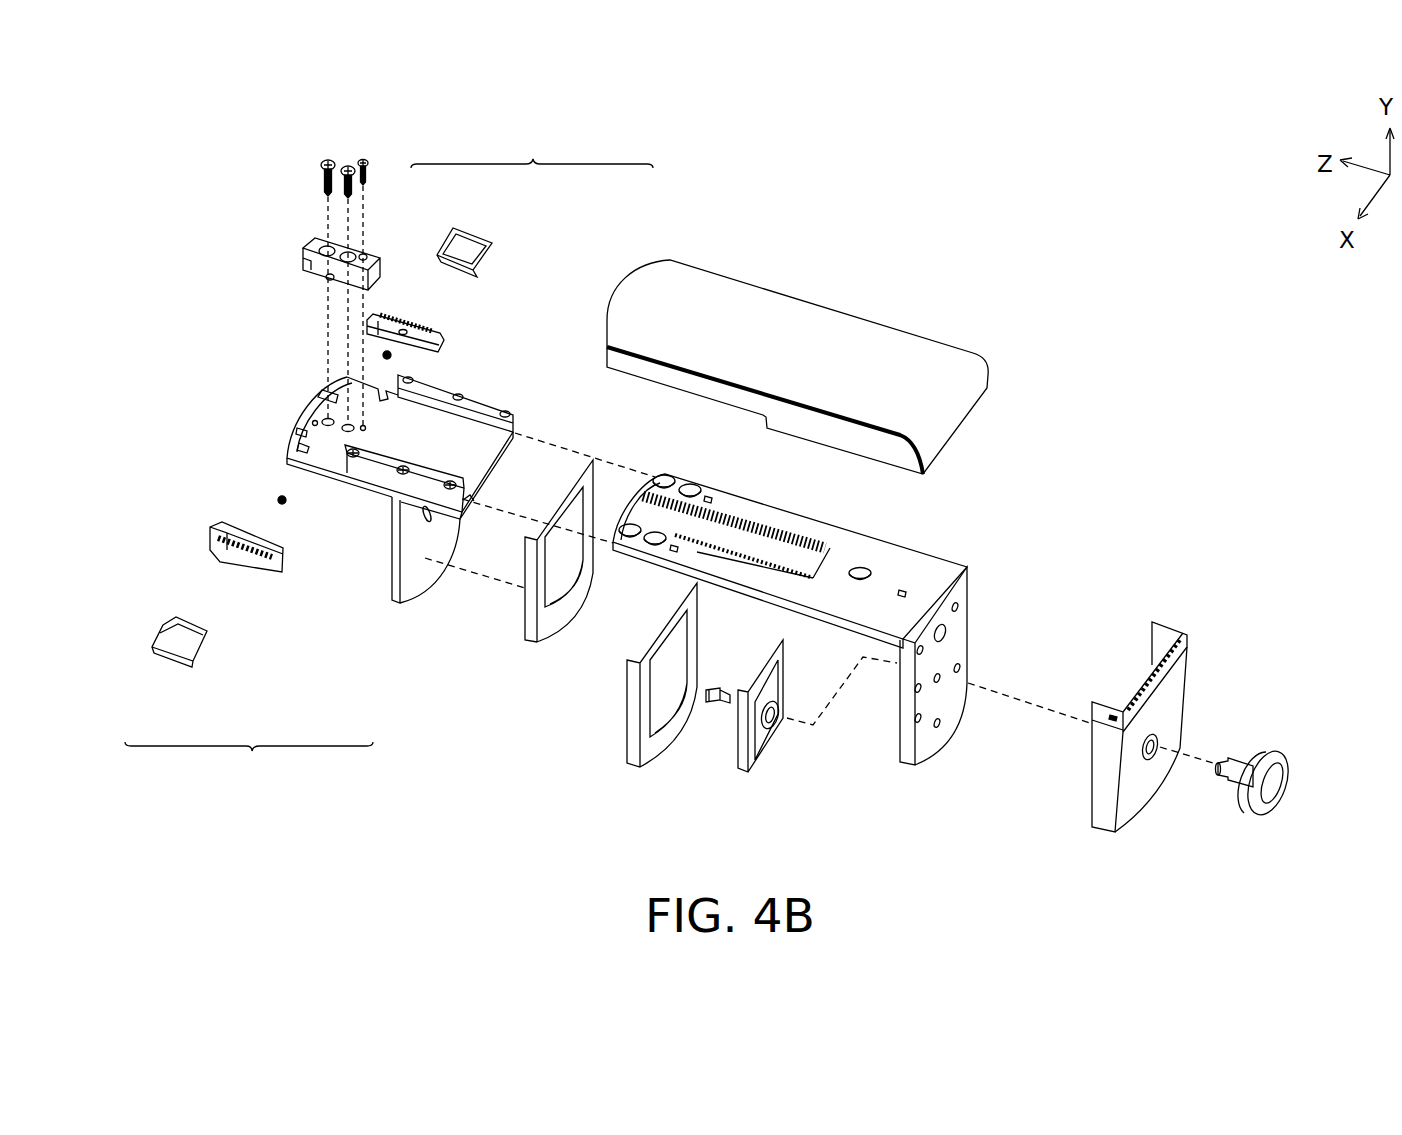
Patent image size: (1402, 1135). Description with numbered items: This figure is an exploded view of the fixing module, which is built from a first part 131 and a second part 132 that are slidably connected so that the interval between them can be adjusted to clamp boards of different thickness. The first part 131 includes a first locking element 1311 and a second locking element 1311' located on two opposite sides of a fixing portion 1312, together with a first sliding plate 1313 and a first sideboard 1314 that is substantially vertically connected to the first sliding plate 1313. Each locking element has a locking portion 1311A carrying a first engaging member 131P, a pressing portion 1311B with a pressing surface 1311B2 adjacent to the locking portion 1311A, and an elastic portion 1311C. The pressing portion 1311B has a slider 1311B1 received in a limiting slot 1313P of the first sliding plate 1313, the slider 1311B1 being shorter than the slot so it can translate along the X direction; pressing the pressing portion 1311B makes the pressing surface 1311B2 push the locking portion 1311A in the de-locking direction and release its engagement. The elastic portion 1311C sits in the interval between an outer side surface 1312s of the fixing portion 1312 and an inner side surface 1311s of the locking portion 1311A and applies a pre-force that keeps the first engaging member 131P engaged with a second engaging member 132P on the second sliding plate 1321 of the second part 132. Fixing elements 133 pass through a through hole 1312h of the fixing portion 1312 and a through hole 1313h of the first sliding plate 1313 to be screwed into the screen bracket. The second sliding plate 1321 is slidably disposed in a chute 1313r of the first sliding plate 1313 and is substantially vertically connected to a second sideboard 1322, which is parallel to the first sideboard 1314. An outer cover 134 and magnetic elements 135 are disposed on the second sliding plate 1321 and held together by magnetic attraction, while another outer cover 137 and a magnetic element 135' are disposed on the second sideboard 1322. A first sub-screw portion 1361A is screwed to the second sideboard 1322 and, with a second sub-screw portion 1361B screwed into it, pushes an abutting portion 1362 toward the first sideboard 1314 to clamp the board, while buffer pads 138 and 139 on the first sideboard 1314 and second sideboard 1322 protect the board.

The first part 131 is at (358, 442).
The second part 132 is at (831, 609).
The fixing element 133 is at (328, 160).
The outer cover 134 is at (862, 343).
The magnetic element 135 is at (772, 496).
The magnetic element 135' is at (989, 643).
The outer cover 137 is at (1103, 790).
The buffer pad 138 is at (650, 748).
The buffer pad 139 is at (543, 632).
The first locking element 1311 is at (249, 764).
The second locking element 1311' is at (532, 150).
The locking portion 1311A is at (385, 312).
The pressing portion 1311B is at (481, 232).
The slider 1311B1 is at (163, 625).
The pressing surface 1311B2 is at (203, 600).
The elastic portion 1311C is at (395, 364).
The inner side surface 1311s is at (427, 352).
The first engaging member 131P is at (415, 323).
The fixing portion 1312 is at (303, 243).
The outer side surface 1312s is at (344, 252).
The through hole 1312h is at (323, 243).
The first sliding plate 1313 is at (370, 478).
The through hole 1313h is at (328, 418).
The limiting slot 1313P is at (305, 444).
The chute 1313r is at (471, 500).
The first sideboard 1314 is at (413, 573).
The second sliding plate 1321 is at (840, 560).
The second sideboard 1322 is at (962, 618).
The second engaging member 132P is at (745, 520).
The first sub-screw portion 1361A is at (1287, 793).
The second sub-screw portion 1361B is at (715, 704).
The abutting portion 1362 is at (760, 737).